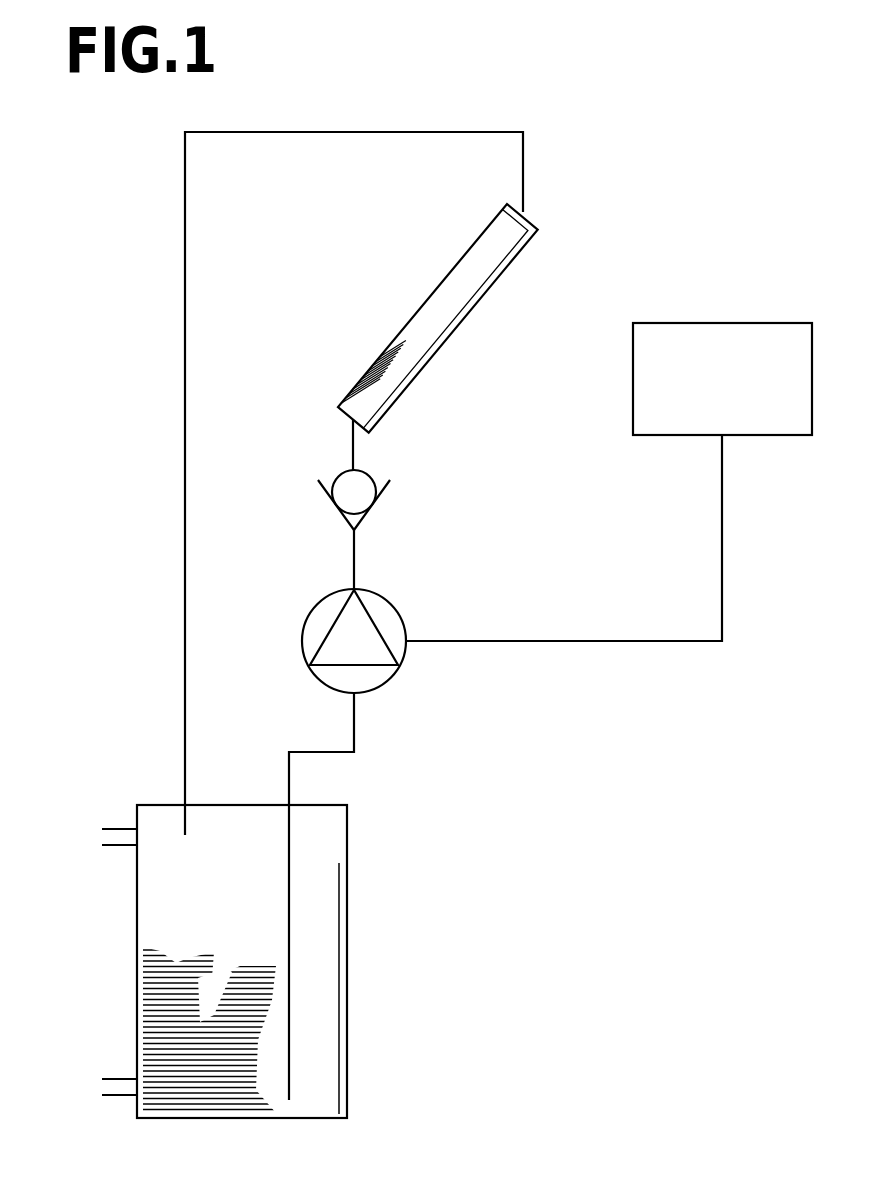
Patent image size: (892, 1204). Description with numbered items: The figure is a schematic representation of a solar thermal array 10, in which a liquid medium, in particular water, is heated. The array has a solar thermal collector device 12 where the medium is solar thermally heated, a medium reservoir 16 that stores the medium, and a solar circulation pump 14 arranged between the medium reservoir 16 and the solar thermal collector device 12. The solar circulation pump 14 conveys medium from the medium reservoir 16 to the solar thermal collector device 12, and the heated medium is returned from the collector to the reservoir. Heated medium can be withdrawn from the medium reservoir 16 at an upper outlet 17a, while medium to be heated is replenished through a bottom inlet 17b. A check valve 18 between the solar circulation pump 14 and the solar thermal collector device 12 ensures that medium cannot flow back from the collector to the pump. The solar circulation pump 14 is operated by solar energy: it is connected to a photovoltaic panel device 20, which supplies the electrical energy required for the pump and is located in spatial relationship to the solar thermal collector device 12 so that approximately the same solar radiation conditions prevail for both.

The solar thermal array 10 is at (462, 607).
The solar thermal collector device 12 is at (425, 313).
The solar circulation pump 14 is at (318, 613).
The medium reservoir 16 is at (328, 983).
The outlet 17a is at (118, 833).
The inlet 17b is at (118, 1083).
The check valve 18 is at (363, 496).
The photovoltaic panel device 20 is at (732, 330).